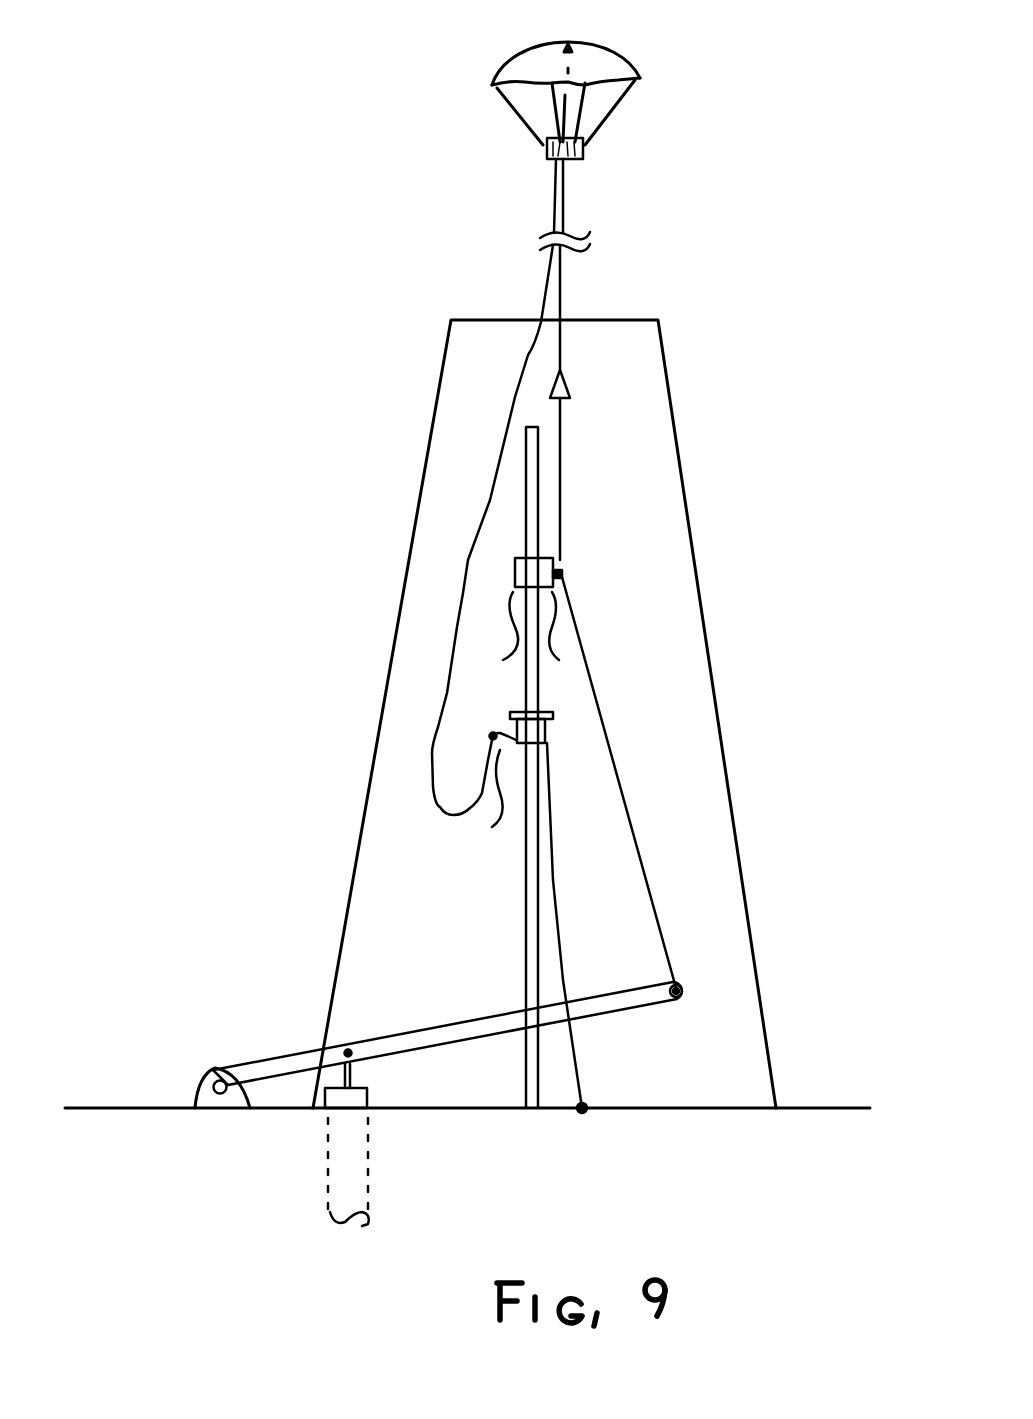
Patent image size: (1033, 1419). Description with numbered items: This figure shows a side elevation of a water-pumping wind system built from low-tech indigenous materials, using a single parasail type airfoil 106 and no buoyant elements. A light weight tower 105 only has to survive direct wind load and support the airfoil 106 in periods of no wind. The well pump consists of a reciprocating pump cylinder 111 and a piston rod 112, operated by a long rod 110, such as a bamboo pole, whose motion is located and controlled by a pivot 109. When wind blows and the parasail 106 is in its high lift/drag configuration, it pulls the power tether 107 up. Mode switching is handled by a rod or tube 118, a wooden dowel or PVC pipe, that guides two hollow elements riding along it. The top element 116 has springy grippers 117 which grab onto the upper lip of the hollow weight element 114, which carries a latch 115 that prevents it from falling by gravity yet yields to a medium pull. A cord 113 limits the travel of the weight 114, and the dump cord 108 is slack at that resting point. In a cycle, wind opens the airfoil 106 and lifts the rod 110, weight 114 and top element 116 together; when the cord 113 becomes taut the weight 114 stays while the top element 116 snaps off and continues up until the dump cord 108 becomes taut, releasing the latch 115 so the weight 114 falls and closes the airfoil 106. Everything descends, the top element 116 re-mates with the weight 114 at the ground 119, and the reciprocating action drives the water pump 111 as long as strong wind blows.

The tower 105 is at (641, 318).
The airfoil 106 is at (602, 60).
The power tether 107 is at (572, 293).
The dump cord 108 is at (513, 378).
The pivot 109 is at (192, 1087).
The long rod 110 is at (268, 1067).
The reciprocating pump cylinder 111 is at (362, 1098).
The piston rod 112 is at (358, 1072).
The cord 113 is at (567, 913).
The hollow weight element 114 is at (550, 727).
The latch 115 is at (479, 810).
The top element 116 is at (517, 580).
The springy grippers 117 is at (543, 644).
The rod or tube 118 is at (515, 920).
The ground 119 is at (683, 1116).